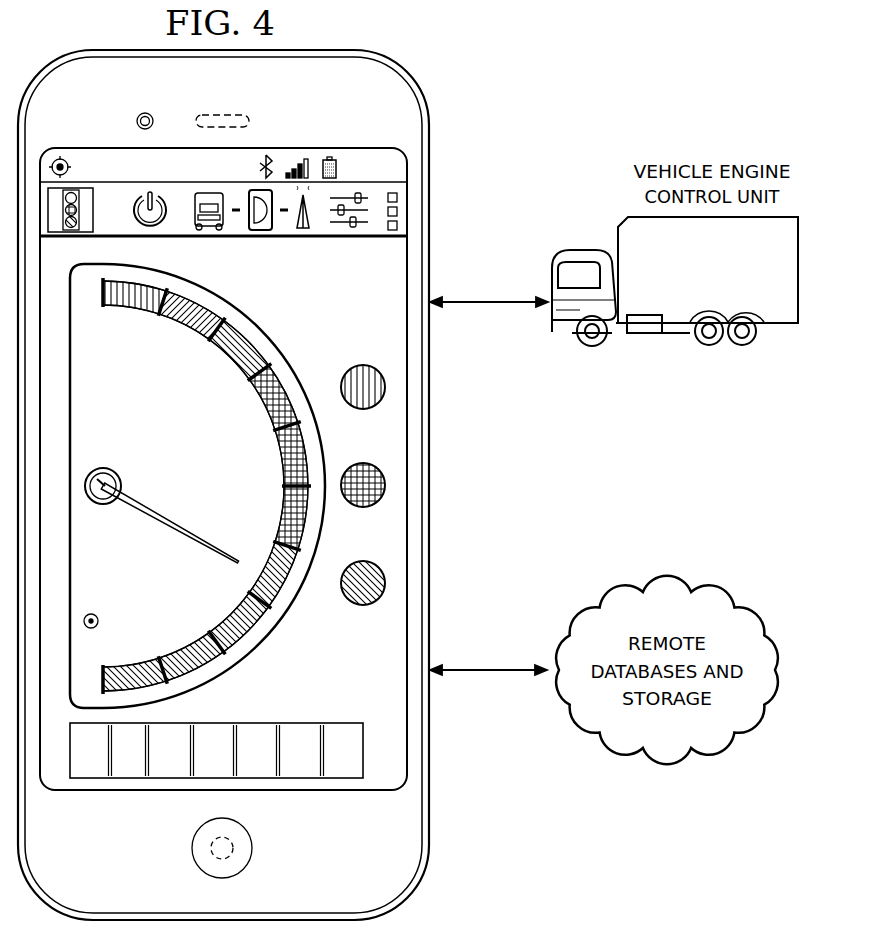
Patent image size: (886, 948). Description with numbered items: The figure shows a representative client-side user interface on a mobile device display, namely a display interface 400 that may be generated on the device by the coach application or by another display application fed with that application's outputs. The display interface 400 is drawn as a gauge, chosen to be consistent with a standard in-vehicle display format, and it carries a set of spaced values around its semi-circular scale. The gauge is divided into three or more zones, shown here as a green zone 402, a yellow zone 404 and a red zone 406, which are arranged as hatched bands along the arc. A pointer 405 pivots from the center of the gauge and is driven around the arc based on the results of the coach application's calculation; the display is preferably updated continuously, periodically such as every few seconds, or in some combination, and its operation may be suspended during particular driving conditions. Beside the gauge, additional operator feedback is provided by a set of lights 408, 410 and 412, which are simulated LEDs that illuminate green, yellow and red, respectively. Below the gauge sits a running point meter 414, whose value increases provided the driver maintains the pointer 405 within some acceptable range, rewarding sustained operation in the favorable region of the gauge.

The display interface 400 is at (324, 309).
The green zone 402 is at (250, 638).
The yellow zone 404 is at (322, 456).
The pointer 405 is at (170, 522).
The red zone 406 is at (202, 307).
The light 408 is at (386, 586).
The light 410 is at (386, 490).
The light 412 is at (386, 388).
The running point meter 414 is at (340, 723).